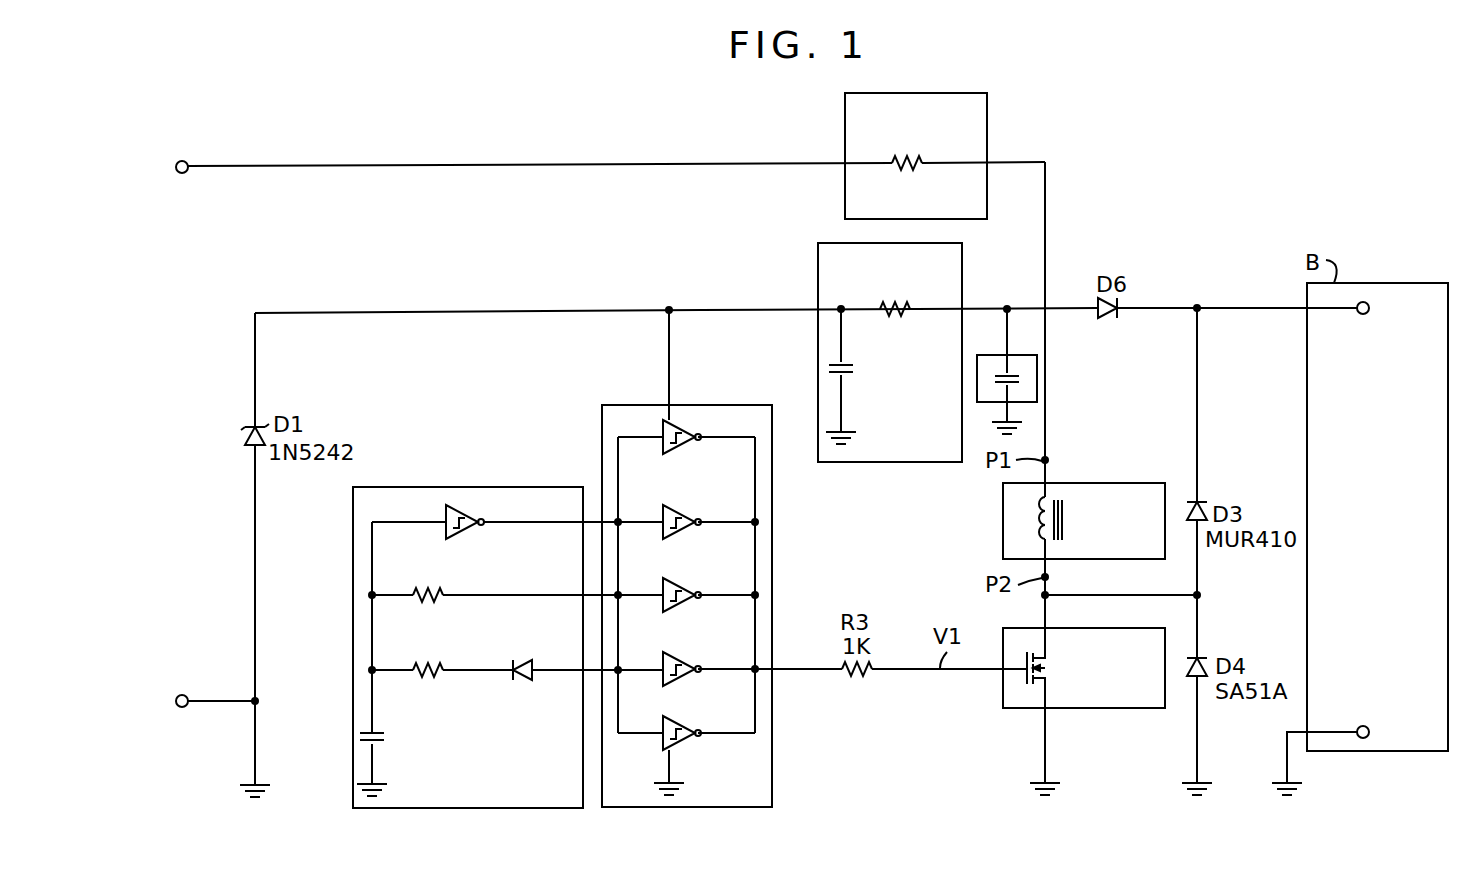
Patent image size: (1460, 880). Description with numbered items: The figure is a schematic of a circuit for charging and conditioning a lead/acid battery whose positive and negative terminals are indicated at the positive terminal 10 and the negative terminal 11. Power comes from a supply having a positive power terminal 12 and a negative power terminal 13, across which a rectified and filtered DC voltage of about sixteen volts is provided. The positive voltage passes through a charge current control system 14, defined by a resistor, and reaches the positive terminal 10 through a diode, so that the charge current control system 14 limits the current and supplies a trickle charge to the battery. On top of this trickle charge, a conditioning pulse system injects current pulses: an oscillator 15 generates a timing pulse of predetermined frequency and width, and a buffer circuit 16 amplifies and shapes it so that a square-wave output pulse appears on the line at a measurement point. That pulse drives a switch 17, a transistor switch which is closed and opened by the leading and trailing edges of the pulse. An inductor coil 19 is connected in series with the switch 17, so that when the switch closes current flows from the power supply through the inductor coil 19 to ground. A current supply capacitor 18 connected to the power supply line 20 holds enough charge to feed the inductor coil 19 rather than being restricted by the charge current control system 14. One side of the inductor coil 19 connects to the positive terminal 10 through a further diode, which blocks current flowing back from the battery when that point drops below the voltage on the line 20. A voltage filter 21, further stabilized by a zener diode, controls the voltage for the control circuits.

The positive terminal 10 is at (1369, 308).
The negative terminal 11 is at (1369, 733).
The positive power terminal 12 is at (184, 174).
The negative power terminal 13 is at (184, 708).
The charge current control system 14 is at (988, 132).
The oscillator 15 is at (403, 808).
The buffer circuit 16 is at (772, 772).
The switch 17 is at (1020, 708).
The current supply capacitor 18 is at (1037, 380).
The inductor coil 19 is at (1003, 531).
The power supply line 20 is at (1047, 195).
The voltage filter 21 is at (818, 268).